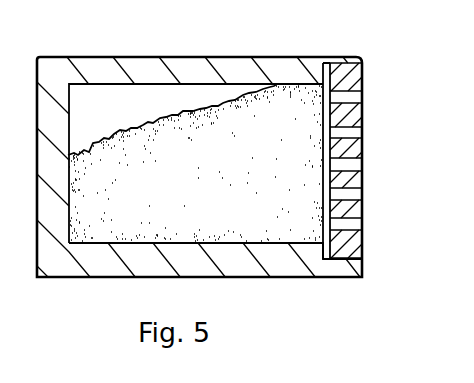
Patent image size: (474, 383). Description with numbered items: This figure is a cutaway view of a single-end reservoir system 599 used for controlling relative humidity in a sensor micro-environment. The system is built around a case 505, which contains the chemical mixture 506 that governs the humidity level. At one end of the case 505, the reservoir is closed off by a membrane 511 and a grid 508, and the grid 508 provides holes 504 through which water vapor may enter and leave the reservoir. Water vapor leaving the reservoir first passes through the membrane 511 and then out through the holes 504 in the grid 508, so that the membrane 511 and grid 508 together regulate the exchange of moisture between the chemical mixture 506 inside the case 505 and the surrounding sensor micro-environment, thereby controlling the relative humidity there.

The case 505 is at (182, 56).
The chemical mixture 506 is at (187, 197).
The grid 508 is at (363, 72).
The holes 504 is at (362, 160).
The membrane 511 is at (318, 223).
The single-end reservoir system 599 is at (248, 169).